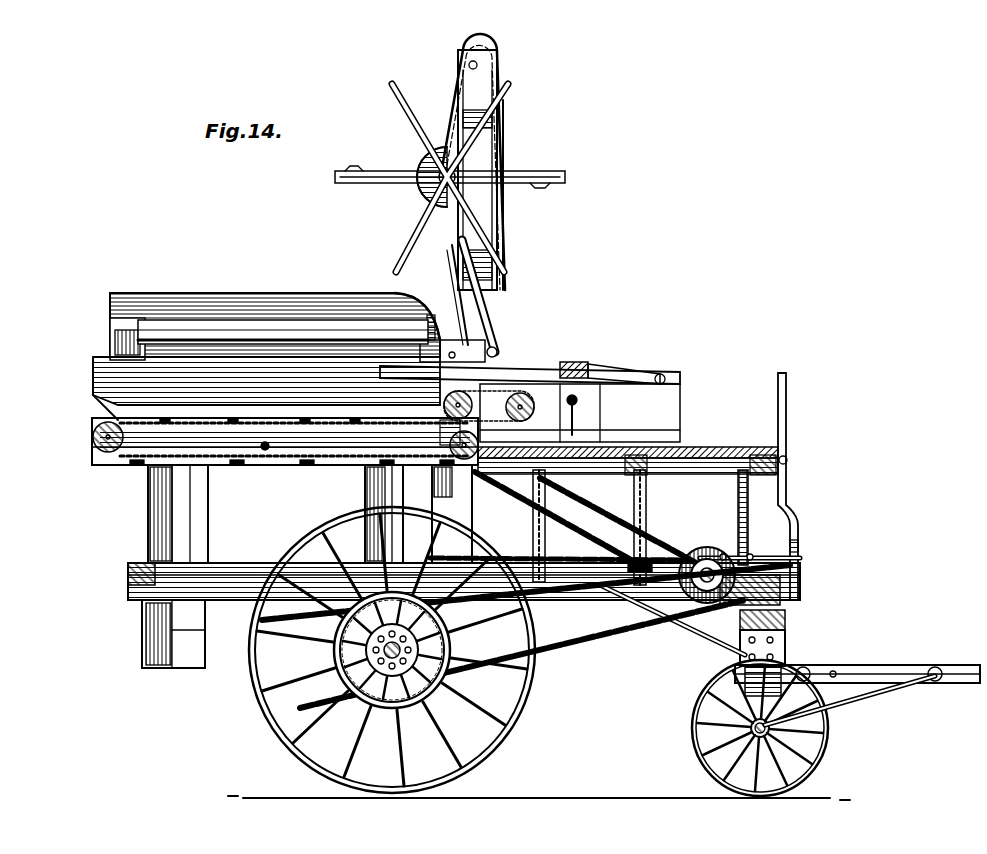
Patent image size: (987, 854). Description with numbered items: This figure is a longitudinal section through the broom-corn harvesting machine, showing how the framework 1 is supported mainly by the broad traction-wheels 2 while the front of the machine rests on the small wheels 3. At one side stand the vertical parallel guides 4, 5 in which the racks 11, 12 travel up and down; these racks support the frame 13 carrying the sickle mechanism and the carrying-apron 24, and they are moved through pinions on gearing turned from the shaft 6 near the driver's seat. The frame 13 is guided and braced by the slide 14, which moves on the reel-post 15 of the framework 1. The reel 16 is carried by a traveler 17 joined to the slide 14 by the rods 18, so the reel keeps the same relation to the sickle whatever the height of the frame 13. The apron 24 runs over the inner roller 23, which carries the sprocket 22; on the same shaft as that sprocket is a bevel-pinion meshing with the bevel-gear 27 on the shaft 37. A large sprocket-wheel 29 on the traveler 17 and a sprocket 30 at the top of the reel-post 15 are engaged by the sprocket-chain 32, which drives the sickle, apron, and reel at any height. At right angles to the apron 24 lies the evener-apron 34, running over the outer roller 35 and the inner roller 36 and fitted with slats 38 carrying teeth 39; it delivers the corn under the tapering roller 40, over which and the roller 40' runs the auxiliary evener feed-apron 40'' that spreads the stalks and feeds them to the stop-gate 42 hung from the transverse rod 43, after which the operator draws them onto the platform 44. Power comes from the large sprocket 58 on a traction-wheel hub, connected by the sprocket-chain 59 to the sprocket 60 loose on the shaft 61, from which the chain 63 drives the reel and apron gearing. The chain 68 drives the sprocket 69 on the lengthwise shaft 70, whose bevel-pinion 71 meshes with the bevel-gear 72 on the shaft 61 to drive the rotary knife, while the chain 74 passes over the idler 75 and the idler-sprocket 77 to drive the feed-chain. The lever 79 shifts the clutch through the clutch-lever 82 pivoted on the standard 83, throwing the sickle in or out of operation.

The framework 1 is at (148, 605).
The traction-wheels 2 is at (520, 712).
The small wheels 3 is at (825, 752).
The guide 4 is at (365, 495).
The guide 5 is at (205, 522).
The shaft 6 is at (266, 450).
The rack 11 is at (400, 500).
The rack 12 is at (170, 510).
The frame 13 is at (216, 300).
The slide 14 is at (480, 366).
The reel-post 15 is at (445, 310).
The reel 16 is at (345, 190).
The traveler 17 is at (470, 210).
The rods 18 is at (485, 322).
The sprocket 22 is at (410, 300).
The inner roller 23 is at (160, 330).
The carrying-apron 24 is at (275, 325).
The bevel-gear 27 is at (452, 338).
The large sprocket-wheel 29 is at (420, 190).
The sprocket 30 is at (497, 62).
The sprocket-chain 32 is at (495, 232).
The evener-apron 34 is at (252, 422).
The roller 35 is at (92, 440).
The roller 36 is at (470, 470).
The shaft 37 is at (445, 428).
The slats 38 is at (232, 420).
The teeth 39 is at (342, 422).
The tapering roller 40 is at (475, 393).
The roller 40' is at (533, 401).
The auxiliary evener feed-apron 40'' is at (501, 438).
The stop-gate 42 is at (578, 400).
The transverse rod 43 is at (605, 368).
The platform 44 is at (700, 450).
The large sprocket 58 is at (385, 700).
The sprocket-chain 59 is at (600, 635).
The sprocket 60 is at (742, 656).
The shaft 61 is at (708, 566).
The chain 63 is at (620, 521).
The chain 68 is at (532, 527).
The sprocket 69 is at (520, 595).
The shaft 70 is at (250, 568).
The bevel-pinion 71 is at (668, 610).
The bevel-gear 72 is at (695, 548).
The chain 74 is at (645, 510).
The idler 75 is at (640, 552).
The idler-sprocket 77 is at (630, 485).
The lever 79 is at (788, 420).
The clutch-lever 82 is at (750, 557).
The standard 83 is at (740, 502).